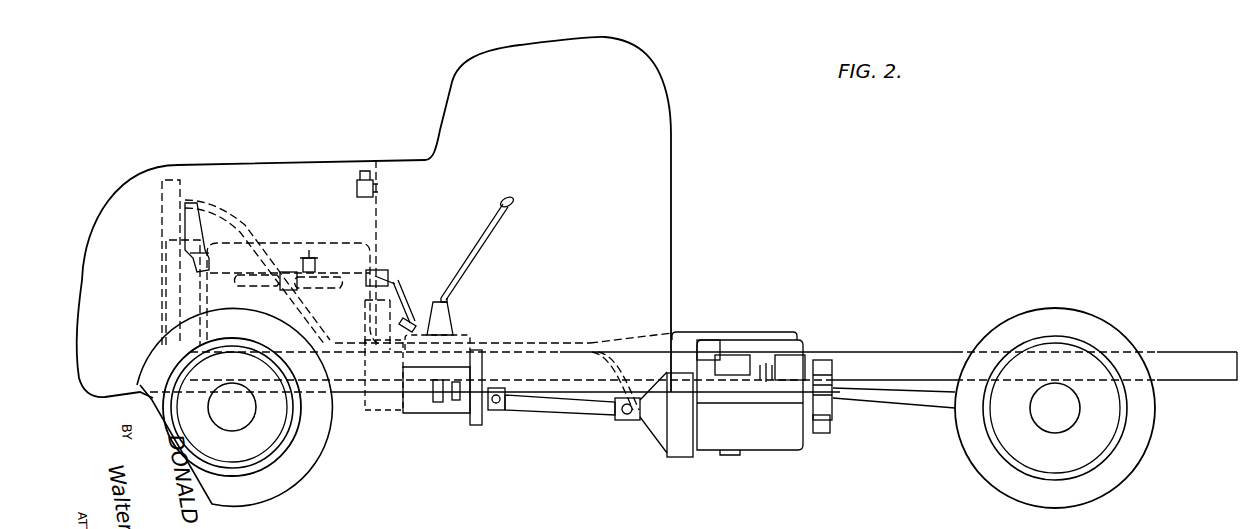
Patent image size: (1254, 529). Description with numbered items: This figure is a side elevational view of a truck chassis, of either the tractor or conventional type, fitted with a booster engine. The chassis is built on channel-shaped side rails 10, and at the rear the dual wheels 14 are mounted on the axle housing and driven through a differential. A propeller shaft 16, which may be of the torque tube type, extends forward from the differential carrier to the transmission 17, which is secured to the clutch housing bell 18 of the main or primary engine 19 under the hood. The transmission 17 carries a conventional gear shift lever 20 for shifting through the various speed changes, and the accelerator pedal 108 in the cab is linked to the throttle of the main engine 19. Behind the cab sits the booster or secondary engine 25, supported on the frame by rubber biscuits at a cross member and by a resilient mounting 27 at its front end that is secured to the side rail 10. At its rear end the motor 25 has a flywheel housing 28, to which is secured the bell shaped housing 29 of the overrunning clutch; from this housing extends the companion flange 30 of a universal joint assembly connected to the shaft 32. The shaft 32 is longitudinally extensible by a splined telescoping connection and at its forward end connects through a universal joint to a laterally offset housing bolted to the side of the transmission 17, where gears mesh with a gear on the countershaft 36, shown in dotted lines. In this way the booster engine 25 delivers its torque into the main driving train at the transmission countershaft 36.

The side rails 10 is at (950, 355).
The dual wheels 14 is at (1093, 324).
The propeller shaft 16 is at (915, 402).
The transmission 17 is at (472, 350).
The clutch housing bell 18 is at (402, 318).
The main or primary engine 19 is at (273, 245).
The gear shift lever 20 is at (483, 239).
The booster or secondary engine 25 is at (758, 446).
The resilient mounting 27 is at (822, 435).
The flywheel housing 28 is at (680, 440).
The bell shaped housing of the overrunning clutch 29 is at (655, 433).
The companion flange 30 is at (628, 421).
The shaft 32 is at (590, 414).
The countershaft 36 is at (422, 397).
The accelerator pedal 108 is at (382, 297).